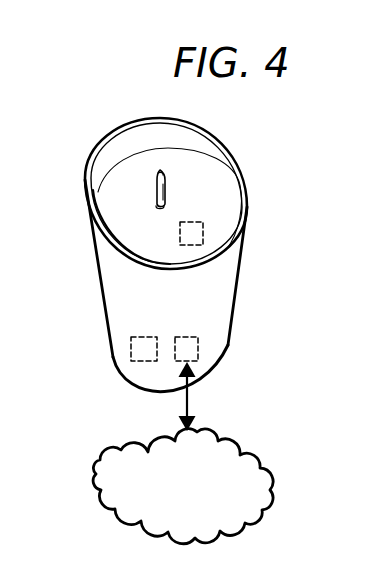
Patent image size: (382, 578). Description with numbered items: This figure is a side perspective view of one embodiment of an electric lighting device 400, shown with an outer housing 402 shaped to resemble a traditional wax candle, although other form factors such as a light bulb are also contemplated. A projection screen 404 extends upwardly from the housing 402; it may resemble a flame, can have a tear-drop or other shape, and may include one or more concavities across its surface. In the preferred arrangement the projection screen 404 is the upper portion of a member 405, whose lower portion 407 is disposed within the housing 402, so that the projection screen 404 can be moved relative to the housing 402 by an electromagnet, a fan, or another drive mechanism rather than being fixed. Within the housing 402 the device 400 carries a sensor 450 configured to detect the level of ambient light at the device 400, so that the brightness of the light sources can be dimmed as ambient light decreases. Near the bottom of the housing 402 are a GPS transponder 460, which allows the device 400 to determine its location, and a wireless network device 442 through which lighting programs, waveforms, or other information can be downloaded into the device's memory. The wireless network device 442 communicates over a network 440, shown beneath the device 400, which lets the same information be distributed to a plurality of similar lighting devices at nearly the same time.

The electric lighting device 400 is at (135, 222).
The outer housing 402 is at (95, 271).
The projection screen 404 is at (166, 183).
The member 405 is at (158, 178).
The lower portion 407 is at (168, 206).
The sensor 450 is at (205, 232).
The GPS transponder 460 is at (130, 353).
The wireless network device 442 is at (199, 345).
The network 440 is at (248, 460).